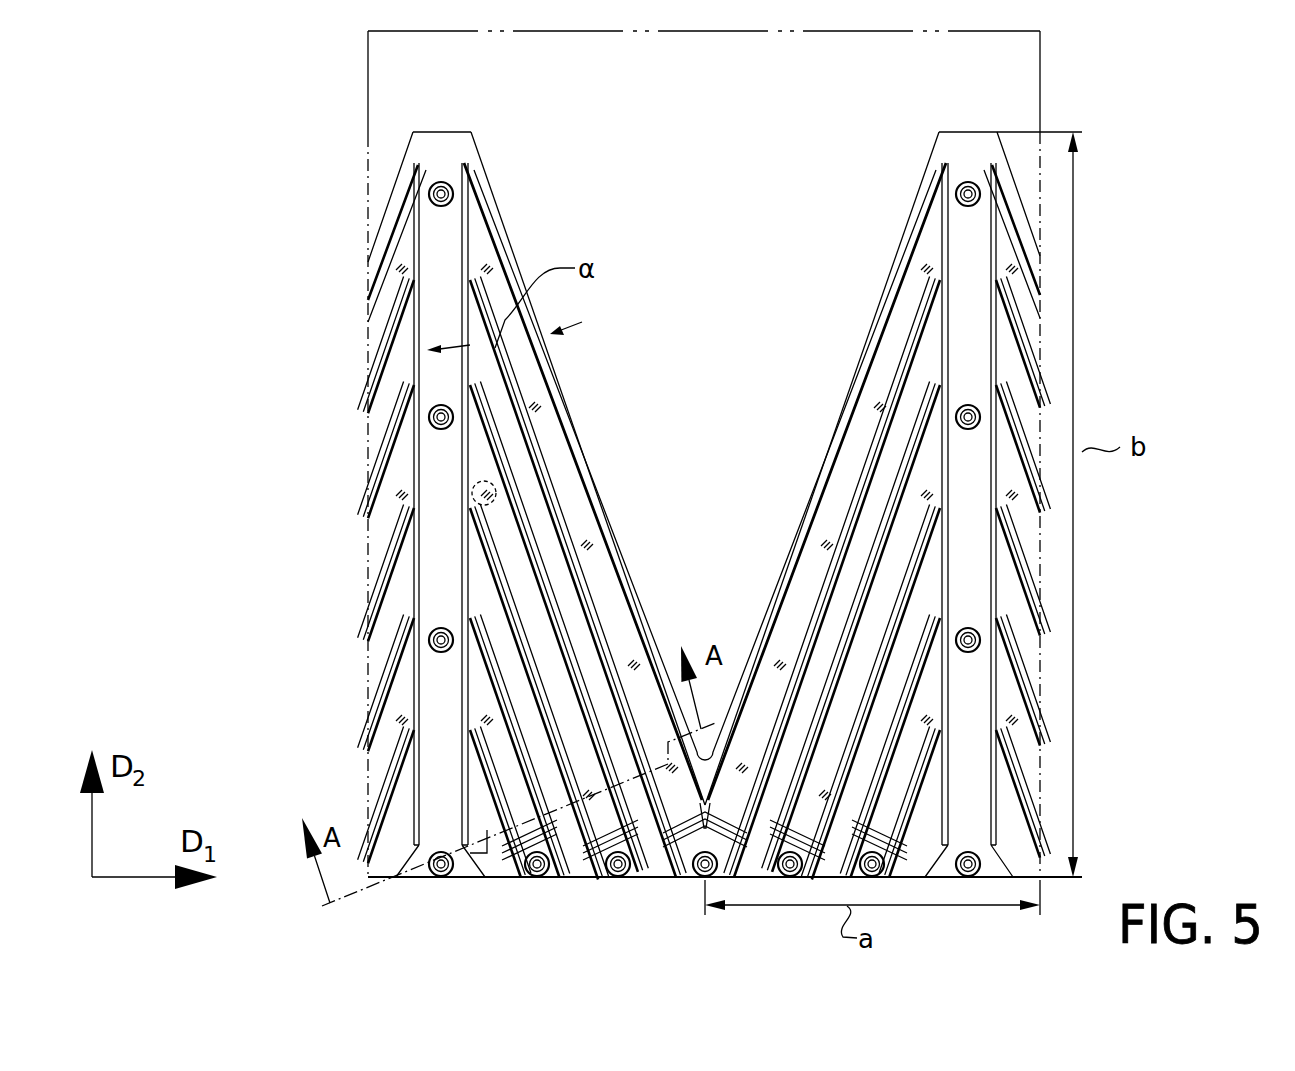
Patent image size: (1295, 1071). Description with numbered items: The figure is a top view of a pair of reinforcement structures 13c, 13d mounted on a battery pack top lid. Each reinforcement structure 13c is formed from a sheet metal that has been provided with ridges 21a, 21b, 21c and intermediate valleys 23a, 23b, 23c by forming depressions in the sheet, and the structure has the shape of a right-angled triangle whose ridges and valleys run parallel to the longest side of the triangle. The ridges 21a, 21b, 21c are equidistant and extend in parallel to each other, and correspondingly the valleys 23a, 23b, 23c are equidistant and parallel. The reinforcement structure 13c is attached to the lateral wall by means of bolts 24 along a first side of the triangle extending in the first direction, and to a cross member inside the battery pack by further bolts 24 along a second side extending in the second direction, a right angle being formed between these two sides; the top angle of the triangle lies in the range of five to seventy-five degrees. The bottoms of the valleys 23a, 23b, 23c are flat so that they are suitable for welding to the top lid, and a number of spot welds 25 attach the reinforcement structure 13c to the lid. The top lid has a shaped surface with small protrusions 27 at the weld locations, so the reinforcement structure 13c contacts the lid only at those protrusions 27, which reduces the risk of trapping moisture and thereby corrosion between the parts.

The reinforcement structure 13c is at (551, 197).
The reinforcement structure 13d is at (858, 196).
The ridge 21a is at (522, 487).
The ridge 21b is at (487, 618).
The ridge 21c is at (500, 866).
The valley 23a is at (527, 390).
The valley 23b is at (495, 543).
The valley 23c is at (497, 748).
The bolt 24 is at (428, 630).
The spot weld 25 is at (490, 272).
The protrusion 27 is at (475, 483).